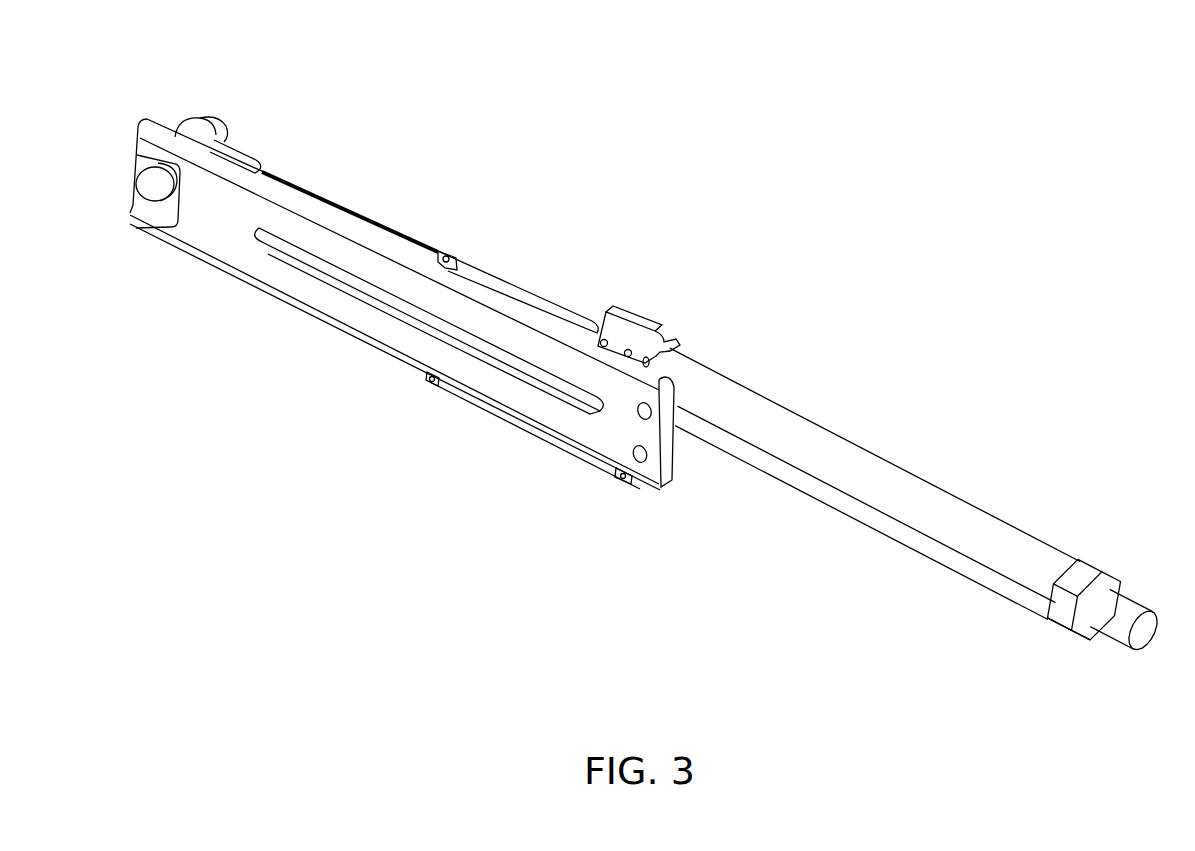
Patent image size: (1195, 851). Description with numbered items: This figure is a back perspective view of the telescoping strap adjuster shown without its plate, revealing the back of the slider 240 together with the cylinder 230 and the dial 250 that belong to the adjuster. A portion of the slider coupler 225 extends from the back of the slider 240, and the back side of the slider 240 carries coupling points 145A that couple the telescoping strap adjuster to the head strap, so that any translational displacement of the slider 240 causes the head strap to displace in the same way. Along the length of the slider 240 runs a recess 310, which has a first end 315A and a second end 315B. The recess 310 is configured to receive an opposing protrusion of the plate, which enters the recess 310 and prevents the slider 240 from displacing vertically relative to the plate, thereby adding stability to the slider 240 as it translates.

The recess 310 is at (422, 315).
The first end 315A is at (263, 235).
The second end 315B is at (603, 413).
The coupling points 145A is at (645, 416).
The slider coupler 225 is at (150, 180).
The slider 240 is at (318, 222).
The cylinder 230 is at (828, 480).
The dial 250 is at (1106, 585).